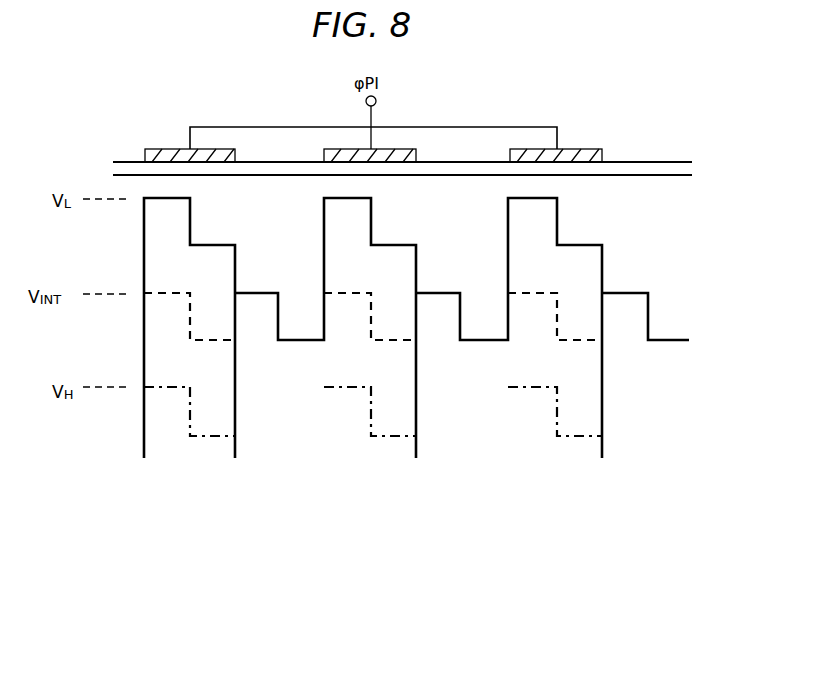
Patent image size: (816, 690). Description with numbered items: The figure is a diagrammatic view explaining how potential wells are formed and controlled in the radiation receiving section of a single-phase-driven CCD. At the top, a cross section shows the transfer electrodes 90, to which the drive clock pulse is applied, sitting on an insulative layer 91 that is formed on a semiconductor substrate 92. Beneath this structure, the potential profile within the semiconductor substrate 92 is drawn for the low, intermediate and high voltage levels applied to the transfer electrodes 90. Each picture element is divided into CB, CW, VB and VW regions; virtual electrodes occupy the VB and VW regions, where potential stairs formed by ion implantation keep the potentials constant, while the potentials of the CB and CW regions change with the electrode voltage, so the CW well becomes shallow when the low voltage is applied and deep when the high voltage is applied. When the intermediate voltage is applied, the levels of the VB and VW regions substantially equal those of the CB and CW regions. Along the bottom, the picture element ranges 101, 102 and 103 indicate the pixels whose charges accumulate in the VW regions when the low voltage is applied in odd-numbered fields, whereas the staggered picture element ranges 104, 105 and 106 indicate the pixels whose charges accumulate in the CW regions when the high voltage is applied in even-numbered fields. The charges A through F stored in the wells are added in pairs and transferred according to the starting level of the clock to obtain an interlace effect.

The transfer electrodes 90 is at (223, 149).
The insulative layer 91 is at (656, 162).
The semiconductor substrate 92 is at (693, 195).
The picture element range 101 is at (318, 545).
The picture element range 102 is at (498, 545).
The picture element range 103 is at (687, 545).
The picture element range 104 is at (405, 624).
The picture element range 105 is at (593, 624).
The picture element range 106 is at (608, 624).